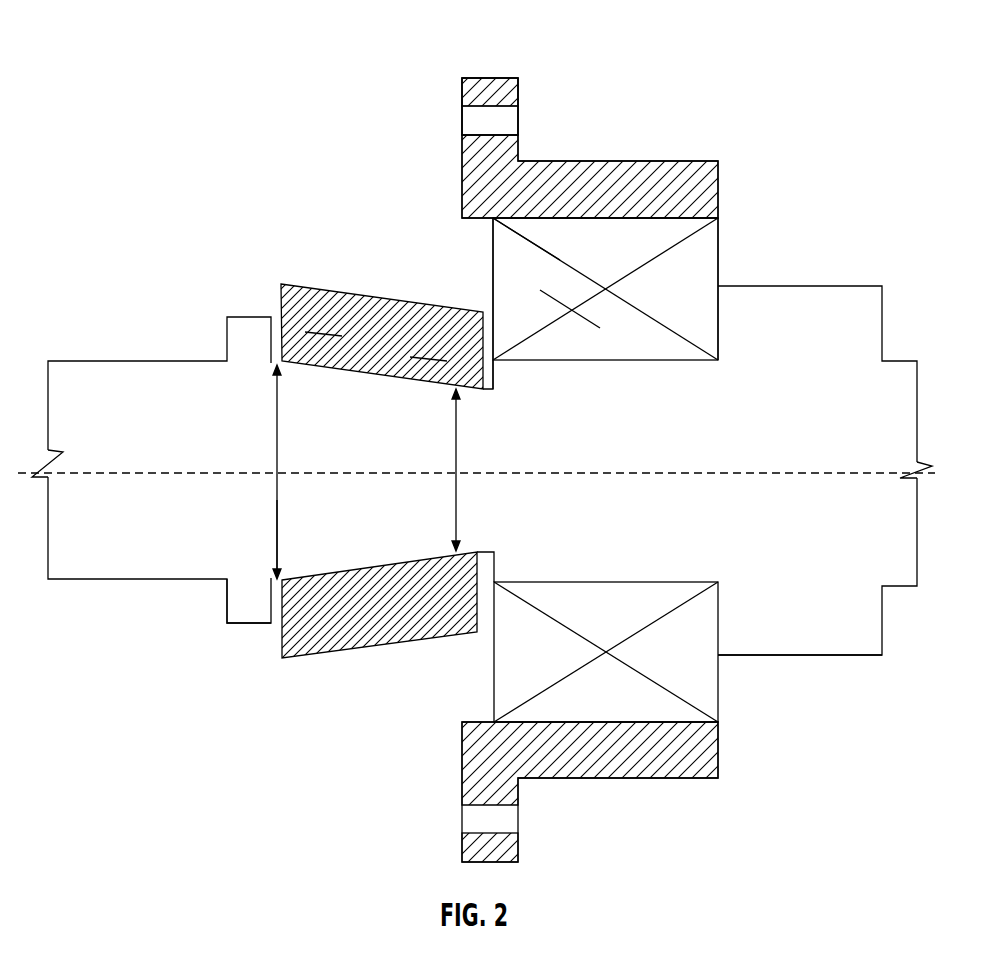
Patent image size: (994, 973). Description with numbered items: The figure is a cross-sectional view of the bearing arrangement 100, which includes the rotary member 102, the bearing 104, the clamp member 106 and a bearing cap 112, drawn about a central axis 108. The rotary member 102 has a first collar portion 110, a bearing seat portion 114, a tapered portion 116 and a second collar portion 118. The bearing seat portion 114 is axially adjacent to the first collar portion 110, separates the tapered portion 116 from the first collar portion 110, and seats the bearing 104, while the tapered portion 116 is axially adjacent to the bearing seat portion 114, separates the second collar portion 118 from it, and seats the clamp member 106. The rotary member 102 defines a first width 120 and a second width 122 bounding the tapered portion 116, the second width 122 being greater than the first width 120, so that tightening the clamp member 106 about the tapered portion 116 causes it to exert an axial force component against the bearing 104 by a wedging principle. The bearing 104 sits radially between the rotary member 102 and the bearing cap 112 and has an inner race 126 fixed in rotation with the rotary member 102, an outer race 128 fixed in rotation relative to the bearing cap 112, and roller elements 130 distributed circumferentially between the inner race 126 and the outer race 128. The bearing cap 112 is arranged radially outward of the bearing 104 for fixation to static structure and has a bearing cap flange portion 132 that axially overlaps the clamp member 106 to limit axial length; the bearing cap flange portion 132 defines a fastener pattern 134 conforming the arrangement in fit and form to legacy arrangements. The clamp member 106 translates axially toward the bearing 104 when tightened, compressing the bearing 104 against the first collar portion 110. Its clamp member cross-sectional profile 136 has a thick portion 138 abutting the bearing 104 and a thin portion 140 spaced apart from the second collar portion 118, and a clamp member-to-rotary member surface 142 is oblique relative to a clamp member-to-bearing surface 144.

The bearing arrangement 100 is at (202, 738).
The rotary member 102 is at (100, 557).
The bearing 104 is at (718, 257).
The clamp member 106 is at (382, 633).
The central axis 108 is at (198, 472).
The first collar portion 110 is at (782, 665).
The bearing cap 112 is at (653, 185).
The bearing seat portion 114 is at (646, 360).
The tapered portion 116 is at (367, 356).
The second collar portion 118 is at (235, 630).
The first width 120 is at (457, 537).
The second width 122 is at (277, 527).
The inner race 126 is at (563, 317).
The outer race 128 is at (540, 248).
The roller elements 130 is at (657, 253).
The bearing cap flange portion 132 is at (442, 97).
The fastener pattern 134 is at (498, 123).
The clamp member cross-sectional profile 136 is at (317, 282).
The thick portion 138 is at (428, 345).
The thin portion 140 is at (323, 320).
The clamp member-to-rotary member surface 142 is at (277, 362).
The clamp member-to-bearing surface 144 is at (493, 303).